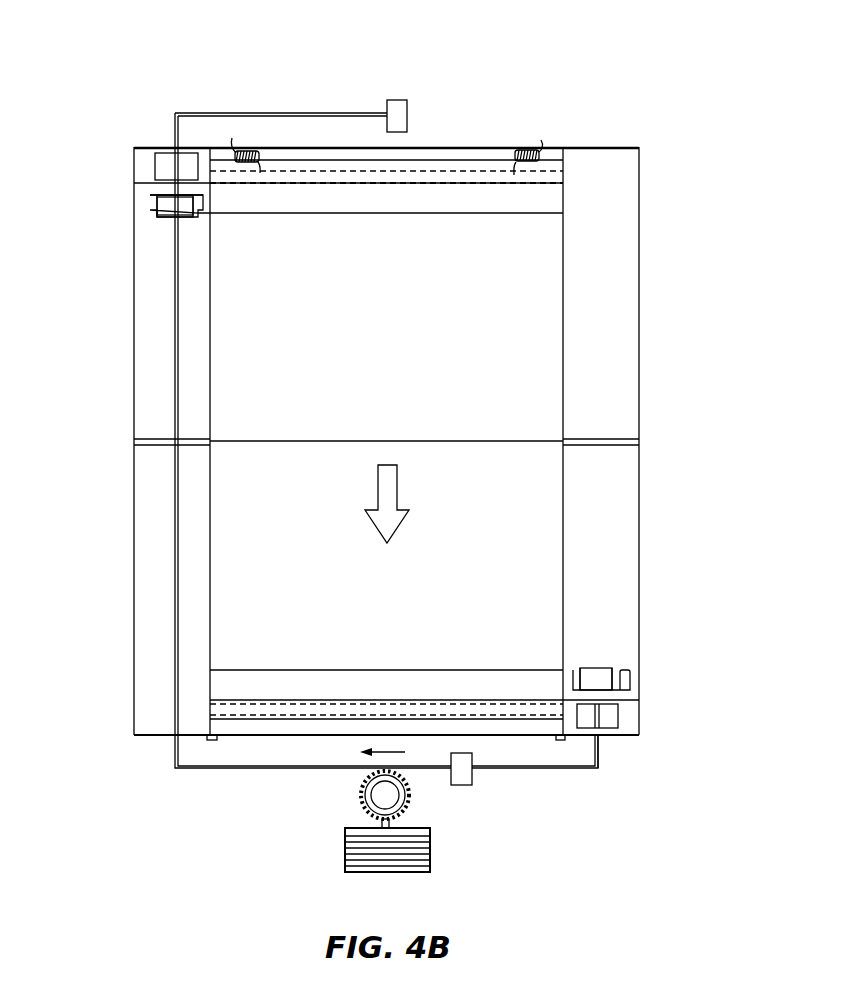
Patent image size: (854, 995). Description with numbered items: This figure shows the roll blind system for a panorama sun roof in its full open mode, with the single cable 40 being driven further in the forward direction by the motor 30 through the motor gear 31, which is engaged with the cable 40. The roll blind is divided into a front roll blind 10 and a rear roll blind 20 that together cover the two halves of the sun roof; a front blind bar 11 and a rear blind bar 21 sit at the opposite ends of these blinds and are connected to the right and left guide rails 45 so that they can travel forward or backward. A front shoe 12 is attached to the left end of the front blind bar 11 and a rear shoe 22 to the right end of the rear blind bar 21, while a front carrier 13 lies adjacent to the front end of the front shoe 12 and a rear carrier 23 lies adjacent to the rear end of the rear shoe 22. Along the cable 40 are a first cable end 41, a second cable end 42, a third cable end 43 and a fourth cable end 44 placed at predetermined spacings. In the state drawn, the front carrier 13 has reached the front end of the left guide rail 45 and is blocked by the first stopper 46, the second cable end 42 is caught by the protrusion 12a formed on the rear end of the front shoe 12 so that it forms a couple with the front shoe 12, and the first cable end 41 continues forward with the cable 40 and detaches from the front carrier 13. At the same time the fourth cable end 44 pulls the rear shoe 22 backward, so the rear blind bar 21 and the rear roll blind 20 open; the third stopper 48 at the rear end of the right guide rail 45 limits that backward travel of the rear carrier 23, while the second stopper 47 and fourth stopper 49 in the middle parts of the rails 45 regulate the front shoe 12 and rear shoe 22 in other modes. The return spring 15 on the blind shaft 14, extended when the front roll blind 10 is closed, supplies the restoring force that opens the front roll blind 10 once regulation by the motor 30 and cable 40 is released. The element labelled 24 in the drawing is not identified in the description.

The front roll blind 10 is at (442, 175).
The front blind bar 11 is at (323, 200).
The front shoe 12 is at (131, 208).
The protrusion 12a is at (155, 208).
The front carrier 13 is at (148, 170).
The blind shaft 14 is at (495, 152).
The return spring 15 is at (540, 140).
The rear roll blind 20 is at (280, 708).
The rear blind bar 21 is at (338, 683).
The rear shoe 22 is at (625, 683).
The rear carrier 23 is at (623, 711).
The lower frame 24 is at (237, 728).
The motor 30 is at (430, 857).
The motor gear 31 is at (412, 798).
The cable 40 is at (173, 765).
The first cable end 41 is at (397, 100).
The second cable end 42 is at (168, 205).
The third cable end 43 is at (467, 778).
The fourth cable end 44 is at (603, 672).
The guide rail 45 is at (632, 297).
The first stopper 46 is at (158, 148).
The second stopper 47 is at (158, 442).
The third stopper 48 is at (623, 734).
The fourth stopper 49 is at (613, 443).